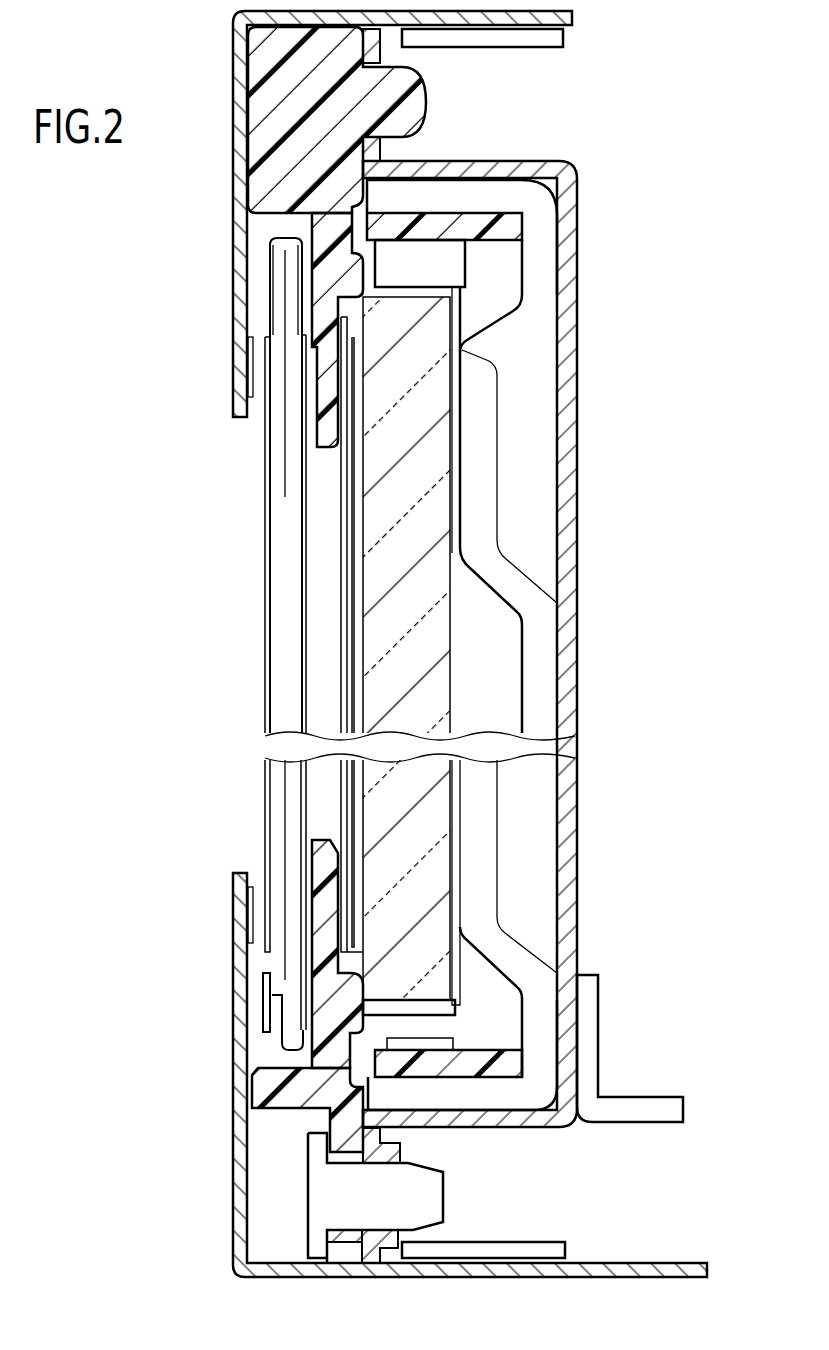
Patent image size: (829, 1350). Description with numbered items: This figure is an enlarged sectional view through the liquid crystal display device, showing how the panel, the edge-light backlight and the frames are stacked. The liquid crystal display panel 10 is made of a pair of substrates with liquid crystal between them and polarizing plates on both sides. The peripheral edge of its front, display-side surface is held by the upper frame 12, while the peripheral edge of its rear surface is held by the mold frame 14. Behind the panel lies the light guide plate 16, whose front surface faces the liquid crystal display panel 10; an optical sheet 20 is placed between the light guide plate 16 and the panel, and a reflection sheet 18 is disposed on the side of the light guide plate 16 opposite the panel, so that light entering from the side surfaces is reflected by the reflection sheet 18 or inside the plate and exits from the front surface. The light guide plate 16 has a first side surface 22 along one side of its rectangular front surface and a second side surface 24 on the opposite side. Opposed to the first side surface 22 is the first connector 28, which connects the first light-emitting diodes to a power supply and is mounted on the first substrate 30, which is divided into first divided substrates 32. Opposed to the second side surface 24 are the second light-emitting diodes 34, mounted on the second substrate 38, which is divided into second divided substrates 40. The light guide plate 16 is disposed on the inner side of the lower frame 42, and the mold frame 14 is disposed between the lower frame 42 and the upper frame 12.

The liquid crystal display panel 10 is at (265, 507).
The upper frame 12 is at (233, 218).
The mold frame 14 is at (270, 52).
The light guide plate 16 is at (427, 393).
The reflection sheet 18 is at (460, 452).
The optical sheet 20 is at (345, 640).
The first side surface 22 is at (558, 253).
The second side surface 24 is at (440, 1032).
The first connector 28 is at (468, 275).
The first substrate 30 is at (536, 214).
The first divided substrate 32 is at (520, 225).
The second light-emitting diode 34 is at (440, 1042).
The second substrate 38 is at (540, 1048).
The second divided substrate 40 is at (522, 1062).
The lower frame 42 is at (578, 507).